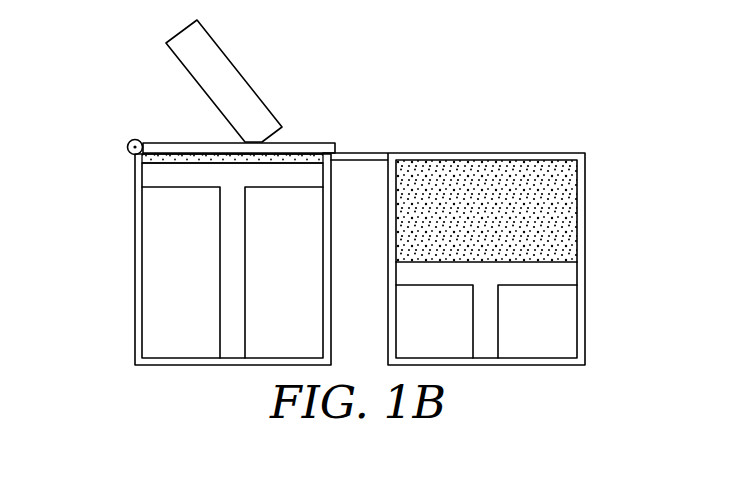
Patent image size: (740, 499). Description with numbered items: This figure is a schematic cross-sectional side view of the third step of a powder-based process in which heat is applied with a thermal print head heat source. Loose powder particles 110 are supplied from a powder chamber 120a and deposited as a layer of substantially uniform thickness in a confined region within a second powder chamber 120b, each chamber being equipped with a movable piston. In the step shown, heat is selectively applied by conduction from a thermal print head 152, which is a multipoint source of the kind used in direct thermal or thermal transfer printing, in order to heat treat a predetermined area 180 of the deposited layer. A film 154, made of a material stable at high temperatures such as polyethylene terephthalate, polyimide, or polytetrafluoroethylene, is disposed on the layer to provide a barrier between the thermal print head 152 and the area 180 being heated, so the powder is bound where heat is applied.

The loose powder particles 110 is at (550, 197).
The powder chamber 120a is at (583, 295).
The powder chamber 120b is at (136, 205).
The thermal print head 152 is at (218, 65).
The film 154 is at (315, 150).
The area 180 is at (203, 153).